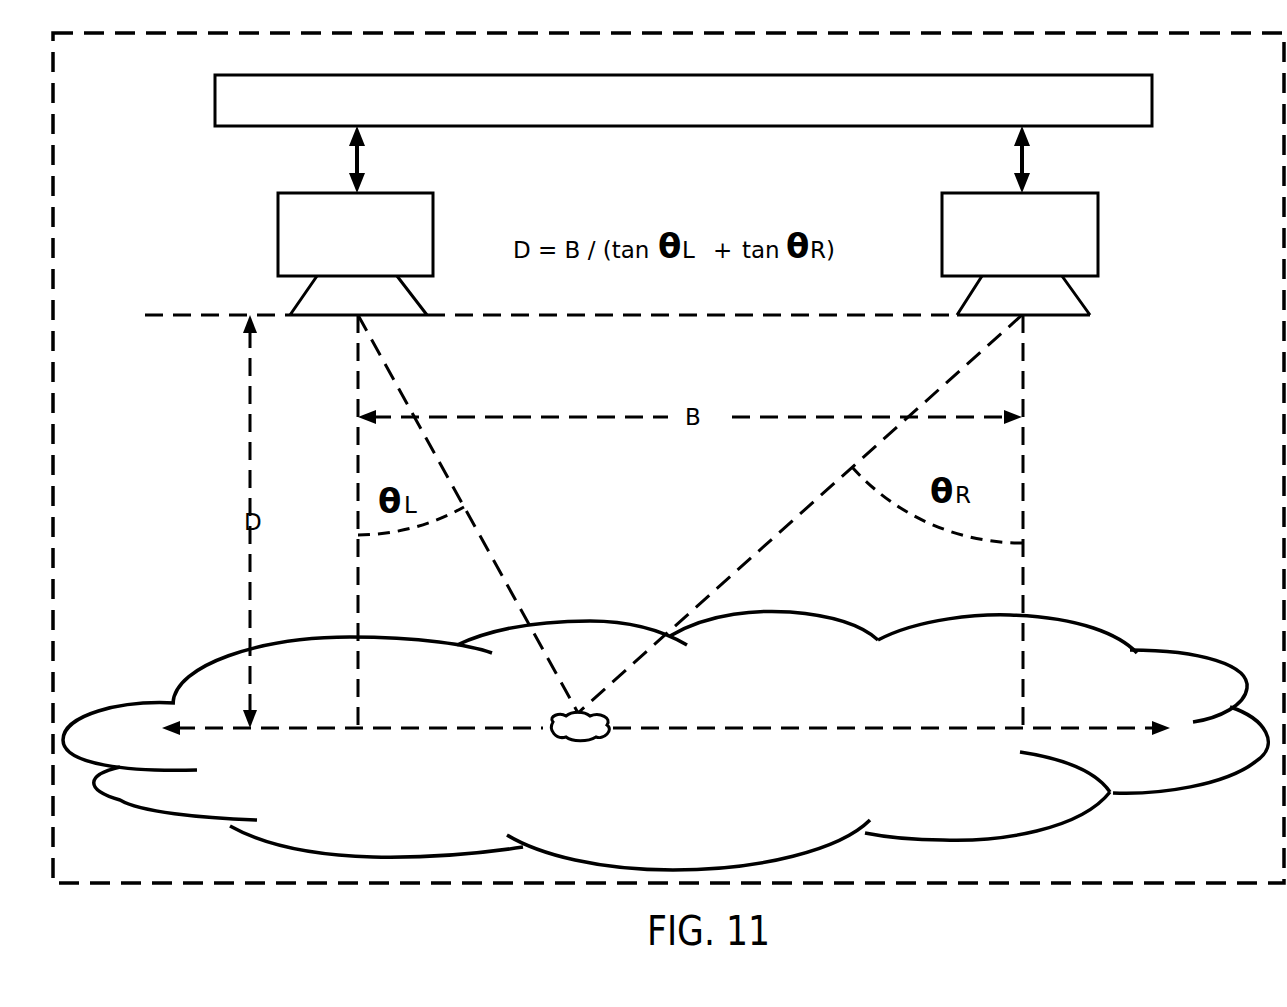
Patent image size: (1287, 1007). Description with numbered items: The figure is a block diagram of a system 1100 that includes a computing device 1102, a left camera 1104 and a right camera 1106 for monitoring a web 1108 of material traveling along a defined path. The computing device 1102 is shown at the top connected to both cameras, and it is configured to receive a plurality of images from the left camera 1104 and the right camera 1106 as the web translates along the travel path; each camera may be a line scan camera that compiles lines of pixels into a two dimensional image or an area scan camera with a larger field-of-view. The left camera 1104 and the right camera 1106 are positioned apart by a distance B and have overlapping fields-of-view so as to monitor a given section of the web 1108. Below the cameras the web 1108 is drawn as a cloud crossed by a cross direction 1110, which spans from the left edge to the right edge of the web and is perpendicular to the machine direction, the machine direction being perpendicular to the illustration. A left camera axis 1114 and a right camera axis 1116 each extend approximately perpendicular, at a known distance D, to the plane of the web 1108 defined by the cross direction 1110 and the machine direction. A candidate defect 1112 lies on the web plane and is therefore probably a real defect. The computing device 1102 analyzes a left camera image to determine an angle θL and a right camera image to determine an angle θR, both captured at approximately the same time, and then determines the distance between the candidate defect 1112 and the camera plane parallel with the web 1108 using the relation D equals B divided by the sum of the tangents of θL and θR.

The system 1100 is at (163, 109).
The computing device 1102 is at (1152, 98).
The left camera 1104 is at (278, 233).
The right camera 1106 is at (1098, 238).
The web 1108 is at (170, 700).
The cross direction 1110 is at (285, 730).
The candidate defect 1112 is at (575, 742).
The left camera axis 1114 is at (358, 618).
The right camera axis 1116 is at (1023, 575).